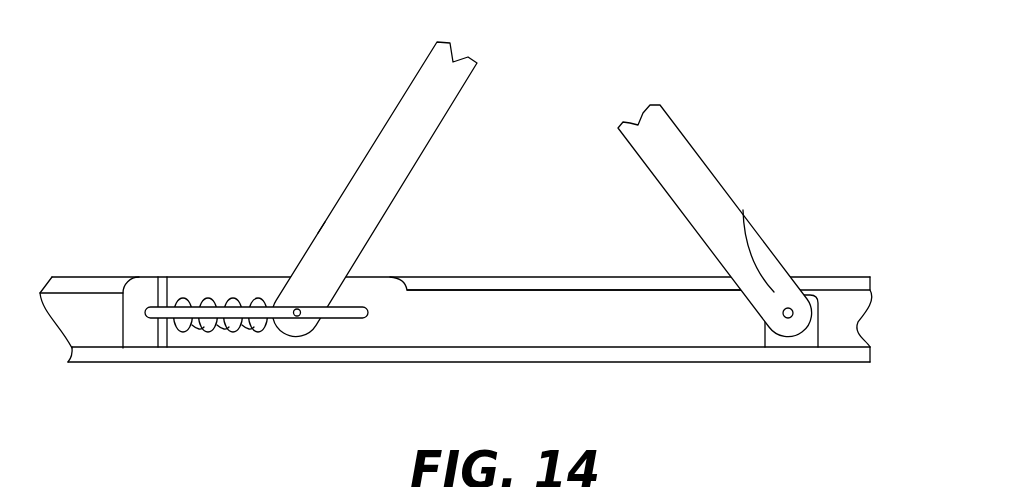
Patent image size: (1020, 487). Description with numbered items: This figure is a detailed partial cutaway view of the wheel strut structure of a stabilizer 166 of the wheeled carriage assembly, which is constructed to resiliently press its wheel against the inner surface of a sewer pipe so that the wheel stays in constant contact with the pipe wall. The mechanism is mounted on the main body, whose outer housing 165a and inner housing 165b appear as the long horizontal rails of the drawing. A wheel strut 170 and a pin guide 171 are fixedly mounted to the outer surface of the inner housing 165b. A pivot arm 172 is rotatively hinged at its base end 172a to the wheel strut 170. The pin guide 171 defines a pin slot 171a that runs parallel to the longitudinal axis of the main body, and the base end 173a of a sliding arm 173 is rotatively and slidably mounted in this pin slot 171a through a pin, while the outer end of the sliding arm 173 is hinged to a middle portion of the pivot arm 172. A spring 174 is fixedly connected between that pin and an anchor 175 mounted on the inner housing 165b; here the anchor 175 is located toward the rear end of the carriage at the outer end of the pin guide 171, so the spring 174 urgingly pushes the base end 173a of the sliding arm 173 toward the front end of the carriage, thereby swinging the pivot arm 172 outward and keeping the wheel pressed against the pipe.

The outer housing 165a is at (815, 275).
The inner housing 165b is at (620, 363).
The stabilizer structure 166 is at (181, 481).
The wheel strut 170 is at (818, 333).
The pin guide 171 is at (413, 325).
The pin slot 171a is at (351, 320).
The pivot arm 172 is at (715, 104).
The base end of pivot arm 172a is at (743, 210).
The sliding arm 173 is at (340, 122).
The base end of sliding arm 173a is at (333, 240).
The spring 174 is at (235, 298).
The anchor 175 is at (155, 292).